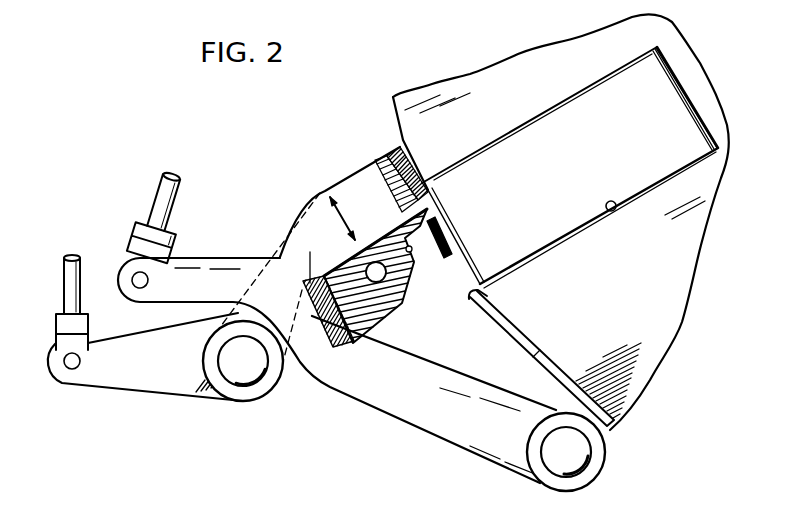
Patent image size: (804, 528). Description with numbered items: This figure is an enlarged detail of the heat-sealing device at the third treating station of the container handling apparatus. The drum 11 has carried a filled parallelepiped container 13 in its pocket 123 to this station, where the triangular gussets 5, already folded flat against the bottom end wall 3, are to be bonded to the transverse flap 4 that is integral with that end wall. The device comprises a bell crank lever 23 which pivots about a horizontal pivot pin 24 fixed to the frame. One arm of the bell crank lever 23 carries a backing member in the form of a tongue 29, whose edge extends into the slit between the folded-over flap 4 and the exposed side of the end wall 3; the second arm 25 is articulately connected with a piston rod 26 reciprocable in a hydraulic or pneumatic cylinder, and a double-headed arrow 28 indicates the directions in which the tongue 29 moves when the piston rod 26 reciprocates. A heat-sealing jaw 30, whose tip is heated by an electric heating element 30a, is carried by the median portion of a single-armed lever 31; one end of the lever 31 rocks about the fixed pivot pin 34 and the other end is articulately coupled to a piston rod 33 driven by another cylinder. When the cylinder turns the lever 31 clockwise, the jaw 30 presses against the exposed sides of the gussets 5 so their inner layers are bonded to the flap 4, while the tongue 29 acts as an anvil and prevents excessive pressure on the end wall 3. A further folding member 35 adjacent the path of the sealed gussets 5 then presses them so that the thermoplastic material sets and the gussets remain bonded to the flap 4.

The drum 11 is at (470, 78).
The container 13 is at (554, 115).
The pocket 123 is at (612, 212).
The bottom end wall 3 is at (470, 270).
The transverse flap 4 is at (440, 232).
The tongue 29 is at (393, 152).
The bell crank lever 23 is at (319, 201).
The double-headed arrow 28 is at (338, 216).
The electric heating element 30a is at (393, 243).
The heat-sealing jaw 30 is at (417, 263).
The triangular gussets 5 is at (427, 236).
The single-armed lever 31 is at (192, 267).
The piston rod 33 is at (175, 213).
The piston rod 26 is at (58, 286).
The second arm 25 is at (155, 380).
The pivot pin 24 is at (253, 374).
The folding member 35 is at (540, 362).
The pivot pin 34 is at (588, 458).